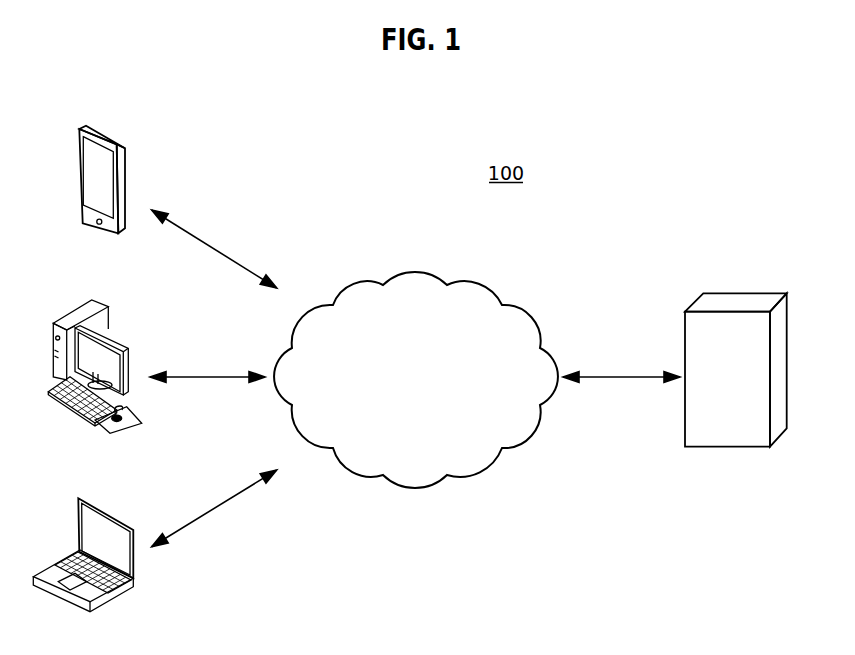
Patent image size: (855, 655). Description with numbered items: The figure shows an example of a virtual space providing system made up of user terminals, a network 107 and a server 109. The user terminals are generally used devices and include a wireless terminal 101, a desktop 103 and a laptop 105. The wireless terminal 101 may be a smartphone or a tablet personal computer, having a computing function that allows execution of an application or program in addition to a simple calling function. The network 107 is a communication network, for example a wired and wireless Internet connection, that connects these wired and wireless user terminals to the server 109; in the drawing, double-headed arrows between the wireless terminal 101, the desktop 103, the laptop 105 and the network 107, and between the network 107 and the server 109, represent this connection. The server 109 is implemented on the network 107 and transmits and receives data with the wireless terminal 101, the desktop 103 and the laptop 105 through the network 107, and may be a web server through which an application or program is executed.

The wireless terminal 101 is at (118, 142).
The desktop 103 is at (72, 310).
The laptop 105 is at (79, 498).
The network 107 is at (415, 270).
The server 109 is at (785, 293).